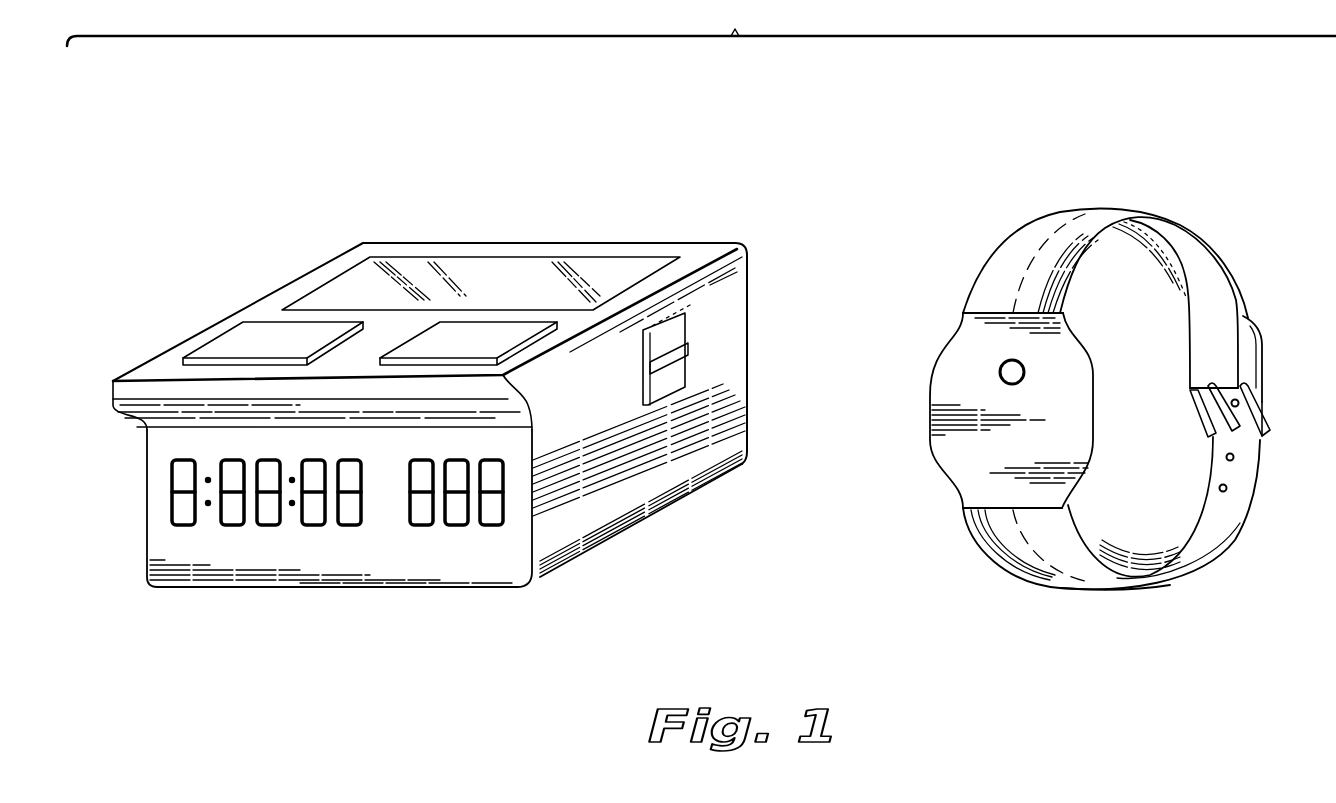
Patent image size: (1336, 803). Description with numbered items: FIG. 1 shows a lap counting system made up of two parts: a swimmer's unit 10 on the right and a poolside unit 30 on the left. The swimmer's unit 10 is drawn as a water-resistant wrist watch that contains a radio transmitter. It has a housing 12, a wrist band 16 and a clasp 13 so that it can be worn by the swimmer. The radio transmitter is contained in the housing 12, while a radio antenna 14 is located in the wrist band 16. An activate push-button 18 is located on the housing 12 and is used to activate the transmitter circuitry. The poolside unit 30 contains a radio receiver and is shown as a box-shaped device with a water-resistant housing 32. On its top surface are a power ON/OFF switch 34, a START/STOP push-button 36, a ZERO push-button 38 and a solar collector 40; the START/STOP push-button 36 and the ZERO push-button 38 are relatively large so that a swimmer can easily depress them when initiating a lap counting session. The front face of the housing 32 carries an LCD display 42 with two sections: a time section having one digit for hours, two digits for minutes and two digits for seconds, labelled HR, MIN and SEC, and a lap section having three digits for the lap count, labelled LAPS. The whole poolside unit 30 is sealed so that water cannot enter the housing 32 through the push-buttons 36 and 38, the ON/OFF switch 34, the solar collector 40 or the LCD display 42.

The swimmer's unit 10 is at (1095, 135).
The housing 12 is at (958, 464).
The clasp 13 is at (1266, 430).
The radio antenna 14 is at (1075, 222).
The wrist band 16 is at (1222, 252).
The activate push-button 18 is at (1007, 372).
The poolside unit 30 is at (377, 192).
The housing 32 is at (143, 461).
The power ON/OFF switch 34 is at (678, 337).
The START/STOP push-button 36 is at (217, 347).
The ZERO push-button 38 is at (522, 330).
The solar collector 40 is at (446, 268).
The LCD display 42 is at (180, 518).